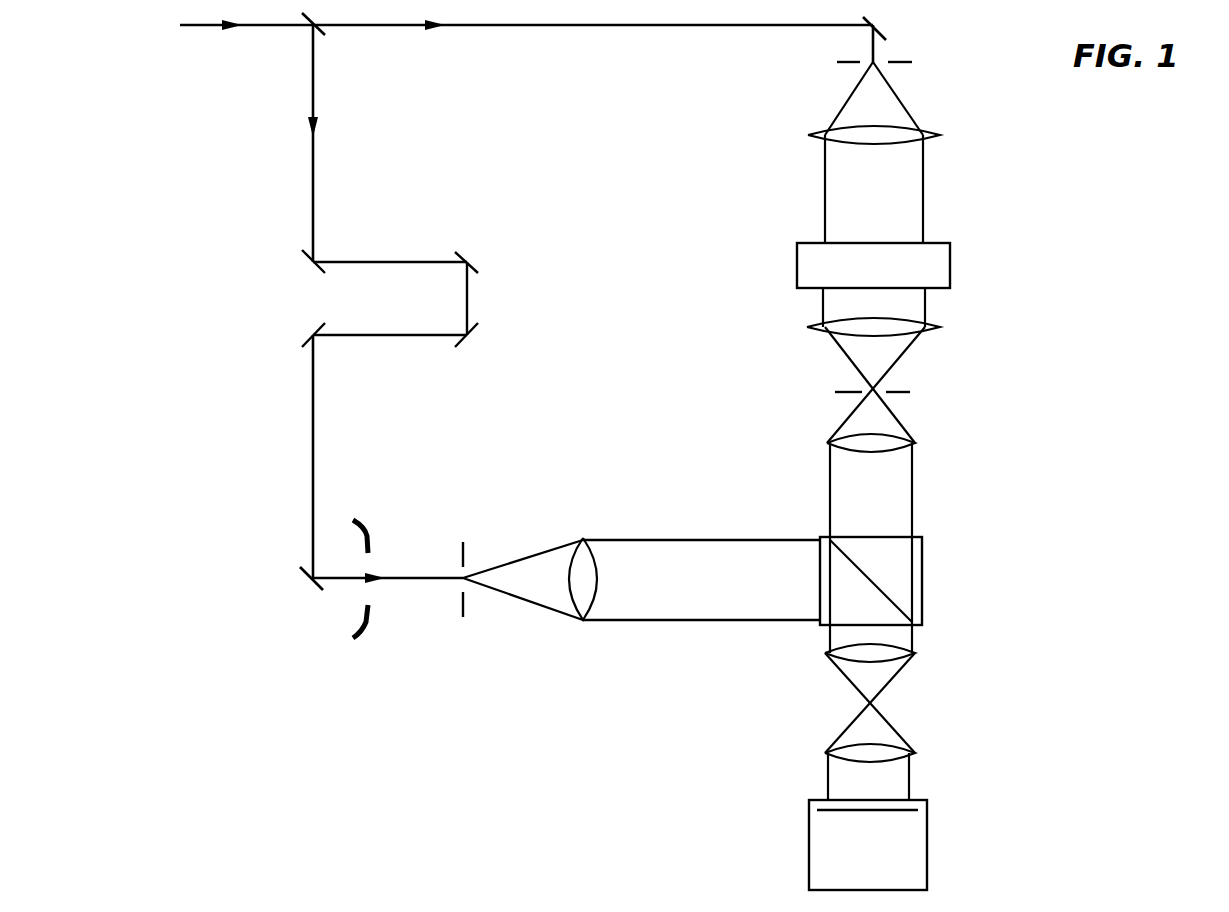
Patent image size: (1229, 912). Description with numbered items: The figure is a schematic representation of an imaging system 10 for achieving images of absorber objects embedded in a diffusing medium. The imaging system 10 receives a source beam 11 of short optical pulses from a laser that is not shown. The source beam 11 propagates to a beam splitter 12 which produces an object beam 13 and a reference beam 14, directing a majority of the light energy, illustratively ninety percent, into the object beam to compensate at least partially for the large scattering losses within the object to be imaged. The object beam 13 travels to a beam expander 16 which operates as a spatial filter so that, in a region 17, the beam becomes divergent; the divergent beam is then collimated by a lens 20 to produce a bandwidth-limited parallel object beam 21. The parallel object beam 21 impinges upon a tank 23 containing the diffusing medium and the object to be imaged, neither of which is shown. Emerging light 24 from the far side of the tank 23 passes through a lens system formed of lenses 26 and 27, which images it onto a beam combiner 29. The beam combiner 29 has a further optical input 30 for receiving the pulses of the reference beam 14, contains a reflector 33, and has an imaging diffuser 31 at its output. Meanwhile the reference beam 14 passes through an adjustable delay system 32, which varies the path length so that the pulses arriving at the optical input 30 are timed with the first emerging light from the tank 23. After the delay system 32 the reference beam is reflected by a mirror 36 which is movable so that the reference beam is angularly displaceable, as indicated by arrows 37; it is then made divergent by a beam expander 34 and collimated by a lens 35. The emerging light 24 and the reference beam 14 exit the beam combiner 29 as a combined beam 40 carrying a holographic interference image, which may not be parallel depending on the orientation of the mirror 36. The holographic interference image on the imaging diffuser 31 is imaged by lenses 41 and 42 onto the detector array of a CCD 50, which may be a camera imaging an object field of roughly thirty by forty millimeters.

The imaging system 10 is at (736, 471).
The source beam 11 is at (265, 27).
The beam splitter 12 is at (320, 32).
The object beam 13 is at (587, 27).
The reference beam 14 is at (312, 173).
The beam expander 16 is at (905, 63).
The region 17 is at (860, 97).
The lens 20 is at (913, 141).
The parallel object beam 21 is at (918, 210).
The tank 23 is at (945, 266).
The emerging light 24 is at (912, 300).
The lens 26 is at (918, 332).
The lens 27 is at (908, 450).
The beam combiner 29 is at (923, 562).
The optical input 30 is at (818, 557).
The imaging diffuser 31 is at (845, 623).
The delay system 32 is at (318, 302).
The reflector 33 is at (898, 610).
The beam expander 34 is at (462, 606).
The lens 35 is at (583, 620).
The mirror 36 is at (303, 575).
The arrows 37 is at (368, 533).
The combined beam 40 is at (900, 633).
The lens 41 is at (907, 657).
The lens 42 is at (908, 753).
The CCD 50 is at (927, 846).